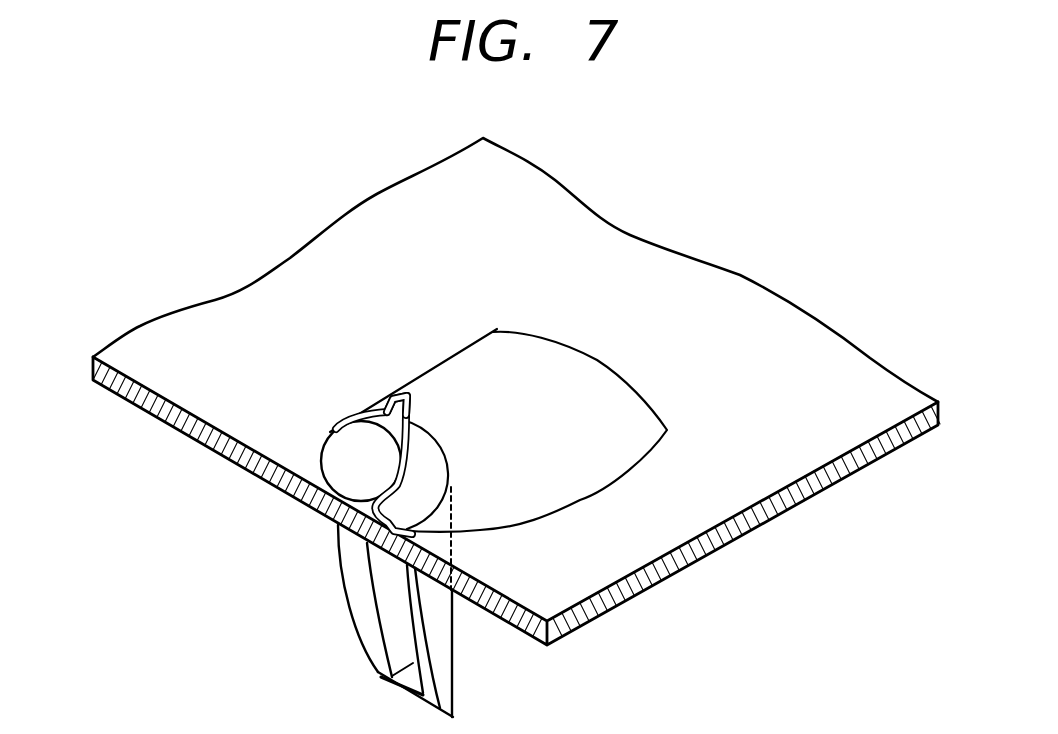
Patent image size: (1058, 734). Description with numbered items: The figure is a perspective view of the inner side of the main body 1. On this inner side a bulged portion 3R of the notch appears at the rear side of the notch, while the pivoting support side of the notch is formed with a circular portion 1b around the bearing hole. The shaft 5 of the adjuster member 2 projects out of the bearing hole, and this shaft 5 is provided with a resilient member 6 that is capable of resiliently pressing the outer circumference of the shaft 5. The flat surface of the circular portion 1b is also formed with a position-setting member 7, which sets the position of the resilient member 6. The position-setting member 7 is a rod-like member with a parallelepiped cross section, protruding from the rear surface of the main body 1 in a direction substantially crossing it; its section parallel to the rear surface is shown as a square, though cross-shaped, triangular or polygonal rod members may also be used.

The main body 1 is at (828, 317).
The circular portion 1b is at (437, 463).
The adjuster member 2 is at (443, 673).
The bulged portion 3R is at (483, 350).
The shaft 5 is at (362, 438).
The resilient member 6 is at (385, 400).
The position-setting member 7 is at (413, 397).